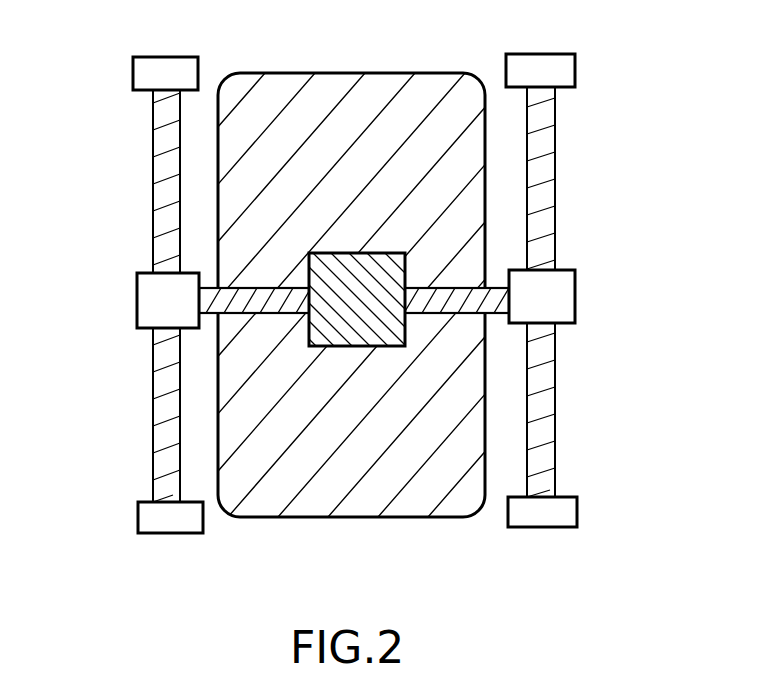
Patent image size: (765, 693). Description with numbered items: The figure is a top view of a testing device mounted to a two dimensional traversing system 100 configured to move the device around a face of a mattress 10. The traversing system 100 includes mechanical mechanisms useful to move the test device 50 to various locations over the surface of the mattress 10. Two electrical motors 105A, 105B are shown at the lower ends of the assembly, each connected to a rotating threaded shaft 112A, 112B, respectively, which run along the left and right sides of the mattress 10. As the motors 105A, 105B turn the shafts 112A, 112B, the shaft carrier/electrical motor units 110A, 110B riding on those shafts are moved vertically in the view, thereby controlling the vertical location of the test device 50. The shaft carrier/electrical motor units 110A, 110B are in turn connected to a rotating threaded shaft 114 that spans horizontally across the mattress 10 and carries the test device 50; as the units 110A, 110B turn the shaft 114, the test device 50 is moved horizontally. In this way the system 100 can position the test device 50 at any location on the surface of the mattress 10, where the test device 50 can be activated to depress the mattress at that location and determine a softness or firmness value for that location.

The mattress 10 is at (400, 74).
The test device 50 is at (357, 348).
The two dimensional traversing system 100 is at (573, 56).
The electrical motor 105A is at (168, 535).
The electrical motor 105B is at (555, 518).
The shaft carrier/electrical motor unit 110A is at (137, 303).
The shaft carrier/electrical motor unit 110B is at (577, 299).
The rotating threaded shaft 112A is at (153, 172).
The rotating threaded shaft 112B is at (557, 177).
The rotating threaded shaft 114 is at (495, 313).